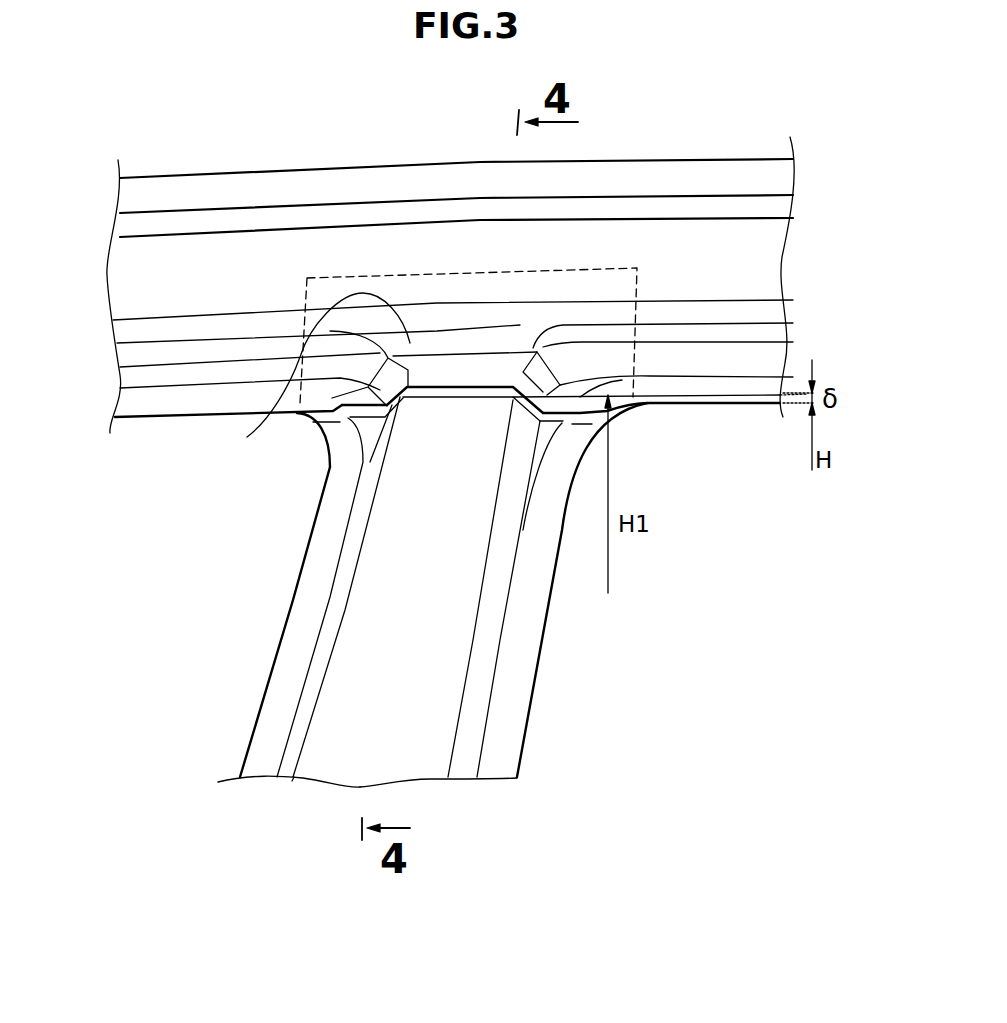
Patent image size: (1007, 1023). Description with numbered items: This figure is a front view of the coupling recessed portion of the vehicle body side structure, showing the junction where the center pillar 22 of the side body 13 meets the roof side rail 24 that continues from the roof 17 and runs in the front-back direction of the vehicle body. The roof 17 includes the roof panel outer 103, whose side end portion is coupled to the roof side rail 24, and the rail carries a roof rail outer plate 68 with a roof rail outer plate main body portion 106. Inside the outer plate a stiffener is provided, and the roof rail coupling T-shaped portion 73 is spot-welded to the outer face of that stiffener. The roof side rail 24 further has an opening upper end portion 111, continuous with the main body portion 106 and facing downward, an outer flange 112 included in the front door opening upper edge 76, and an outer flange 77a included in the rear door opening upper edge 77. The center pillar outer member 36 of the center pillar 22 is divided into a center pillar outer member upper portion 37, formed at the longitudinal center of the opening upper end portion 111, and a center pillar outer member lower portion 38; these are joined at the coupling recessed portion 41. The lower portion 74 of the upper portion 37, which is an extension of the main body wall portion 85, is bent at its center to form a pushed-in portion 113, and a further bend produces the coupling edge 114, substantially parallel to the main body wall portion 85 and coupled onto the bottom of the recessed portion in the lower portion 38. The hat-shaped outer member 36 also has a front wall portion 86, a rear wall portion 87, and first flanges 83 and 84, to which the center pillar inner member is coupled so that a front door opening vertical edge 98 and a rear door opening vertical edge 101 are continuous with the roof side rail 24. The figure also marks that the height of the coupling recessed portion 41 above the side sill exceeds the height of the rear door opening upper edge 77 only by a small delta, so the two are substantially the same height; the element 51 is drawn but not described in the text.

The roof 17 is at (300, 168).
The roof side rail 24 is at (188, 233).
The roof panel outer 103 is at (362, 180).
The roof rail outer plate 68 is at (427, 245).
The lower portion 74 is at (488, 340).
The roof rail coupling T-shaped portion 73 is at (568, 265).
The opening upper end portion 111 is at (694, 310).
The roof rail outer plate main body portion 106 is at (762, 262).
The outer flange 112 is at (138, 408).
The front door opening upper edge 76 is at (162, 420).
The rear door opening upper edge 77 is at (748, 407).
The outer flange 77a is at (749, 378).
The center pillar outer member upper portion 37 is at (297, 398).
The center pillar outer member 36 is at (212, 435).
The center pillar outer member lower portion 38 is at (343, 540).
The coupling recessed portion 41 is at (427, 322).
The pushed-in portion 113 is at (454, 358).
The coupling edge 114 is at (506, 376).
The side body 13 is at (204, 594).
The pillar inner 51 is at (377, 616).
The front door opening vertical edge 98 is at (270, 677).
The first flange 83 is at (273, 732).
The front wall portion 86 is at (290, 745).
The center pillar 22 is at (300, 780).
The main body wall portion 85 is at (419, 758).
The rear wall portion 87 is at (467, 748).
The first flange 84 is at (505, 732).
The rear door opening vertical edge 101 is at (533, 685).